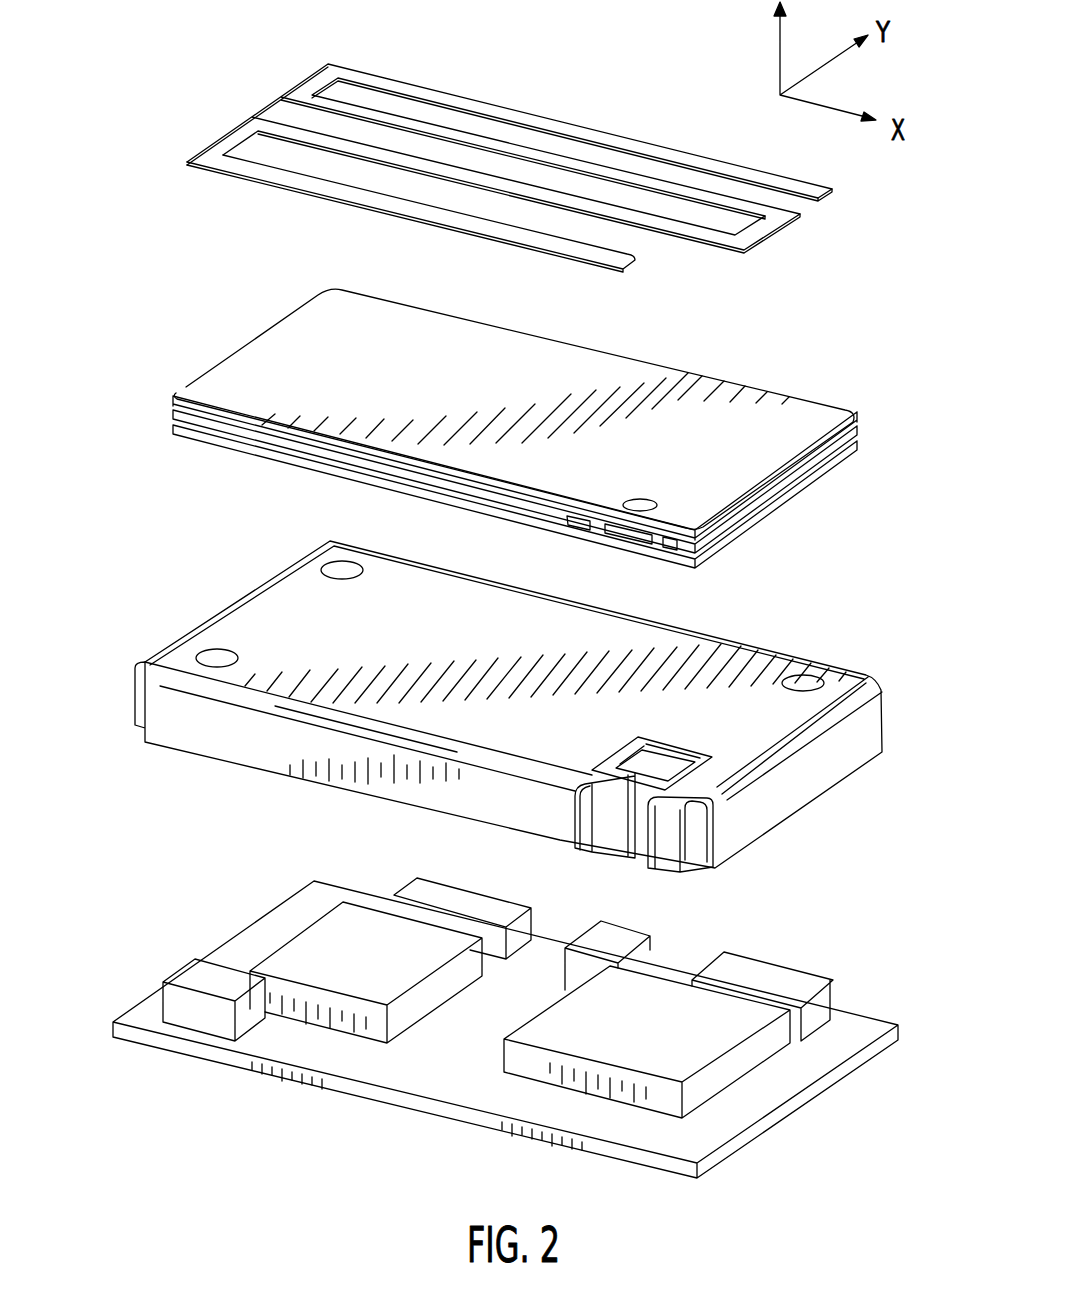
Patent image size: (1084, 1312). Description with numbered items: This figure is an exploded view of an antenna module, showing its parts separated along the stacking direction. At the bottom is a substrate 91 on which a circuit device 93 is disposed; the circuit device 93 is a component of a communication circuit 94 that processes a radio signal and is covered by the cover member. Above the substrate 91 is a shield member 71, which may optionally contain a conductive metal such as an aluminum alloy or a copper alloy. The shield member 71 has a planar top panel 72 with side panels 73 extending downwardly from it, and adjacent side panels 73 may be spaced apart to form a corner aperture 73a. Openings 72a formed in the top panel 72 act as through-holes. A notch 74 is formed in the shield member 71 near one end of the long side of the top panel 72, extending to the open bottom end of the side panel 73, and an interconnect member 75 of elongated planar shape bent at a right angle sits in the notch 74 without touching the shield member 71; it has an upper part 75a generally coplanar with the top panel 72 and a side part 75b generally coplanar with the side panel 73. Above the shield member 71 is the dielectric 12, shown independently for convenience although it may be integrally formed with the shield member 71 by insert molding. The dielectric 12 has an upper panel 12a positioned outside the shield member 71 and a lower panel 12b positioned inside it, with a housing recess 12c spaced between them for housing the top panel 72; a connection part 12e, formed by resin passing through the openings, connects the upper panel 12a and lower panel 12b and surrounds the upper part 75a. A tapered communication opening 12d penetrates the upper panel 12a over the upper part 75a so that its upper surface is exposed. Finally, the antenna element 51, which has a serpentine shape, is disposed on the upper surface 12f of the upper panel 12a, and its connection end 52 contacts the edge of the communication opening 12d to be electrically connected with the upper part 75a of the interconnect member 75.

The antenna element 51 is at (673, 149).
The connection end 52 is at (634, 261).
The dielectric 12 is at (493, 428).
The upper panel 12a is at (172, 399).
The lower panel 12b is at (170, 424).
The housing recess 12c is at (240, 436).
The communication opening 12d is at (645, 503).
The connection part 12e is at (597, 522).
The upper surface 12f is at (685, 388).
The shield member 71 is at (508, 729).
The top panel 72 is at (640, 650).
The opening 72a is at (210, 655).
The side panel 73 is at (235, 740).
The corner aperture 73a is at (693, 840).
The notch 74 is at (687, 758).
The interconnect member 75 is at (657, 788).
The upper part 75a is at (643, 772).
The side part 75b is at (603, 821).
The substrate 91 is at (505, 1035).
The circuit device 93 is at (658, 1003).
The communication circuit 94 is at (288, 923).